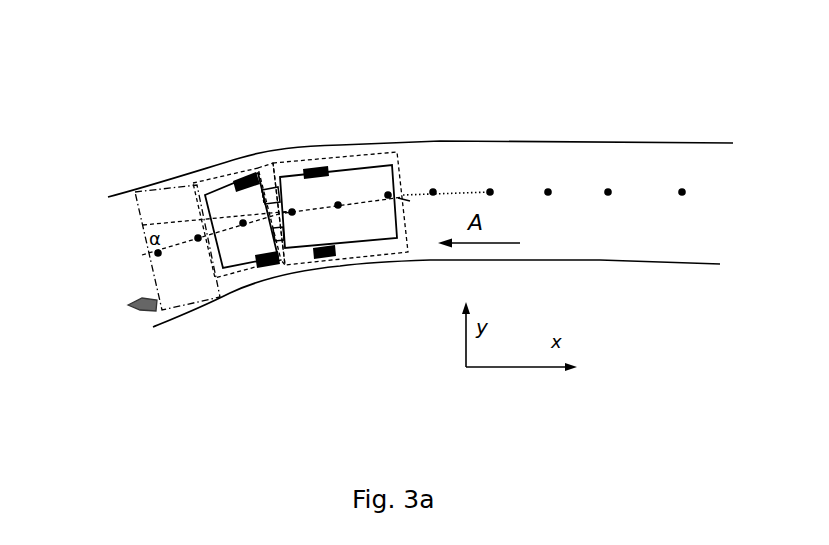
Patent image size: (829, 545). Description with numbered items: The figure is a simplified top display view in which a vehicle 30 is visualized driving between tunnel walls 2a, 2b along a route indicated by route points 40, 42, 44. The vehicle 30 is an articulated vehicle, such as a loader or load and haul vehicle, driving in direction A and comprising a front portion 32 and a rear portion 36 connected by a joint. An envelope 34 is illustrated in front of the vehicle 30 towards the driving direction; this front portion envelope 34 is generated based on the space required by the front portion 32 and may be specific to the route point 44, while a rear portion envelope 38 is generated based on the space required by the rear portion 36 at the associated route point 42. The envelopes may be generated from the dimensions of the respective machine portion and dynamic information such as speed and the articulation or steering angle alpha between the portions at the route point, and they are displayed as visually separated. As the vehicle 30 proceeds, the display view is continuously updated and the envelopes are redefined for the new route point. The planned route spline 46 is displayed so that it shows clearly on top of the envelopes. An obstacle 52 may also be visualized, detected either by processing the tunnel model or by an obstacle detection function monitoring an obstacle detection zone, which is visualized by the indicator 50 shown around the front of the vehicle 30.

The tunnel wall 2a is at (605, 142).
The tunnel wall 2b is at (647, 263).
The vehicle 30 is at (274, 187).
The front portion 32 is at (221, 200).
The envelope 34 is at (232, 178).
The rear portion 36 is at (293, 188).
The rear portion envelope 38 is at (370, 155).
The route point 40 is at (548, 192).
The route point 42 is at (338, 207).
The route point 44 is at (243, 224).
The route spline 46 is at (467, 192).
The obstacle detection zone indicator 50 is at (133, 195).
The obstacle 52 is at (155, 327).